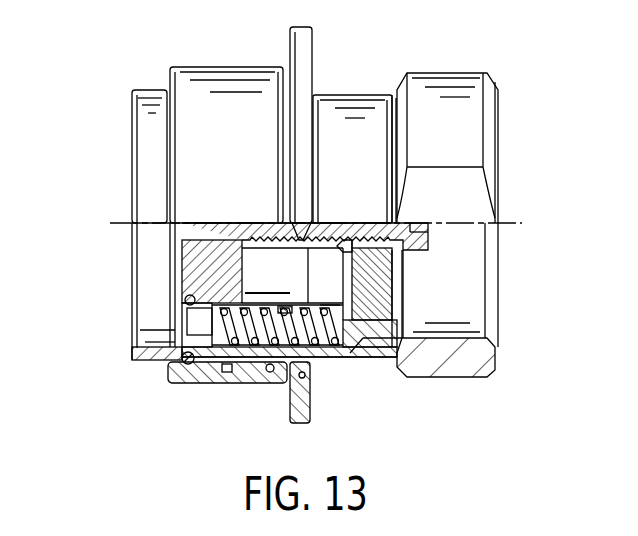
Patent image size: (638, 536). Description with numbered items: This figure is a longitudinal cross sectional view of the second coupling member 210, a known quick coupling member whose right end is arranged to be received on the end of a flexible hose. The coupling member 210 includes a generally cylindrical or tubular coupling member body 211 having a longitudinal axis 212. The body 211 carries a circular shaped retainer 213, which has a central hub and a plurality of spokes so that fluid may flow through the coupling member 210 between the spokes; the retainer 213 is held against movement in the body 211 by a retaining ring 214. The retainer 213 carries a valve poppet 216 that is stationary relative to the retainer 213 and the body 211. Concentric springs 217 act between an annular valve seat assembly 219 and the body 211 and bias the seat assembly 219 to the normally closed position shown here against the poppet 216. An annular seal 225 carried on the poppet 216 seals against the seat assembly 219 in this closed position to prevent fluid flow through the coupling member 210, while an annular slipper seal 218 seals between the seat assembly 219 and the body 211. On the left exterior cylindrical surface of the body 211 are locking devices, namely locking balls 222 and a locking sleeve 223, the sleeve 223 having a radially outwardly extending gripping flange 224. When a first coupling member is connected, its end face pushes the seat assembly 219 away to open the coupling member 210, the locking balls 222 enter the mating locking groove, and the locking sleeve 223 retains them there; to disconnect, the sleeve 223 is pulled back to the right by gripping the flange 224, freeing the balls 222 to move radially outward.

The second coupling member 210 is at (563, 103).
The coupling member body 211 is at (383, 346).
The longitudinal axis 212 is at (513, 222).
The retainer 213 is at (385, 281).
The retaining ring 214 is at (395, 323).
The valve poppet 216 is at (249, 241).
The concentric springs 217 is at (335, 348).
The annular slipper seal 218 is at (285, 306).
The annular valve seat assembly 219 is at (175, 323).
The locking balls 222 is at (195, 364).
The locking sleeve 223 is at (258, 380).
The gripping flange 224 is at (302, 427).
The annular seal 225 is at (187, 302).